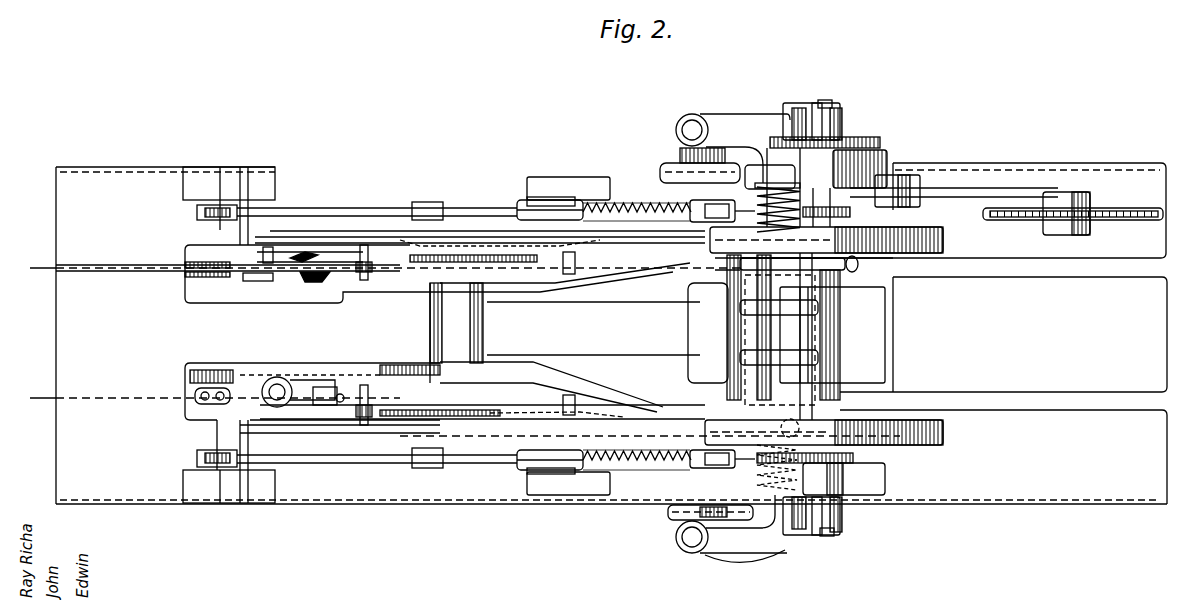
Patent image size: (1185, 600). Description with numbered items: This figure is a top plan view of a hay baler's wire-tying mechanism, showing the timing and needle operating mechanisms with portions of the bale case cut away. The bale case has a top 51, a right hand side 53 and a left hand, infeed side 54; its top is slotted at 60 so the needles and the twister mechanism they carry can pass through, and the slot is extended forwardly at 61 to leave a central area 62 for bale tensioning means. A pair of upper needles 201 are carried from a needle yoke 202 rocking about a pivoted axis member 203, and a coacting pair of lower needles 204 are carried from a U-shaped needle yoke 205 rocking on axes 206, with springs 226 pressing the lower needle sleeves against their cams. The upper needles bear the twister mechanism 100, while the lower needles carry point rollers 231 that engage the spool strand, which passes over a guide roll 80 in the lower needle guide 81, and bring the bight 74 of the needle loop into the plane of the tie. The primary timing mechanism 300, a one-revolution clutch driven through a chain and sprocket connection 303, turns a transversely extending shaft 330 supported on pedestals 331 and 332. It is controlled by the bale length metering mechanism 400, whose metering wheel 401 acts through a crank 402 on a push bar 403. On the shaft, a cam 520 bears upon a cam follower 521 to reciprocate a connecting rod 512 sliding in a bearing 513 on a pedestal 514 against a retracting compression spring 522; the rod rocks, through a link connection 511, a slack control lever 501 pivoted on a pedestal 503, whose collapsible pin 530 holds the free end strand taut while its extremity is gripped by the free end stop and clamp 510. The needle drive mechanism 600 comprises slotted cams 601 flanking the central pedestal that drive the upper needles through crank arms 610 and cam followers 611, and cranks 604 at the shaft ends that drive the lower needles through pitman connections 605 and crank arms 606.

The top of the bale case 51 is at (165, 335).
The right hand side of the bale case 53 is at (485, 504).
The left hand side of the bale case 54 is at (163, 143).
The slot 60 is at (247, 304).
The forward extension of the slot 61 is at (1015, 398).
The central area 62 is at (920, 334).
The bight 74 is at (272, 275).
The guide roll 80 is at (245, 272).
The lower needle guide 81 is at (290, 255).
The twister mechanism 100 is at (283, 383).
The upper needles 201 is at (368, 357).
The needle yoke 202 is at (562, 295).
The pivoted axis member 203 is at (737, 345).
The lower needles 204 is at (458, 240).
The U-shaped needle yoke 205 is at (728, 120).
The axes 206 is at (678, 520).
The springs 226 is at (753, 478).
The point rollers 231 is at (327, 282).
The primary timing mechanism 300 is at (885, 155).
The chain and sprocket connection 303 is at (855, 140).
The transversely extending shaft 330 is at (865, 272).
The pedestal 331 is at (887, 480).
The central main bearing pedestal 332 is at (870, 340).
The bale length metering mechanism 400 is at (1051, 207).
The metering wheel 401 is at (1110, 208).
The crank 402 is at (1068, 192).
The push bar 403 is at (957, 188).
The slack control lever 501 is at (345, 246).
The pedestal 503 is at (236, 485).
The free end stop and clamp 510 is at (227, 392).
The link connection 511 is at (316, 458).
The connecting rod 512 is at (498, 190).
The bearing 513 is at (537, 207).
The pedestal 514 is at (563, 200).
The cam 520 is at (848, 212).
The cam follower 521 is at (740, 190).
The retracting compression spring 522 is at (663, 190).
The collapsible pin 530 is at (368, 282).
The needle drive mechanism 600 is at (815, 320).
The slotted cams 601 is at (945, 242).
The cranks 604 is at (845, 118).
The pitman connections 605 is at (826, 108).
The crank arms 606 is at (750, 120).
The crank arms 610 is at (752, 276).
The cam followers 611 is at (860, 266).